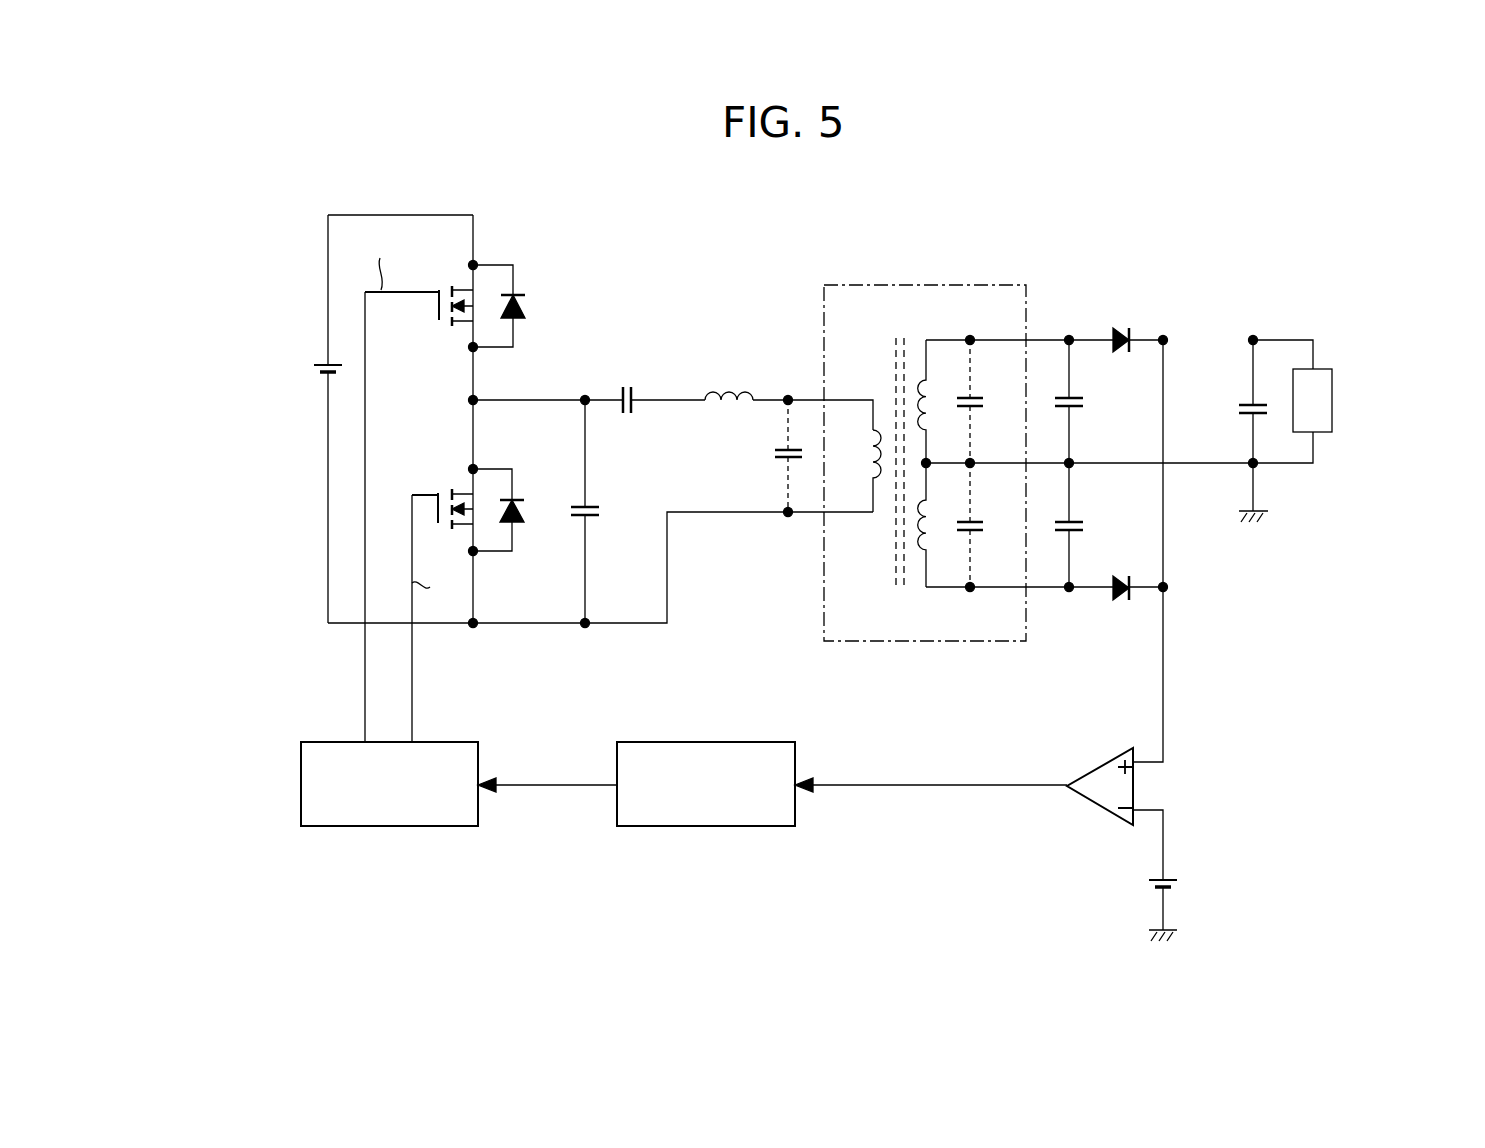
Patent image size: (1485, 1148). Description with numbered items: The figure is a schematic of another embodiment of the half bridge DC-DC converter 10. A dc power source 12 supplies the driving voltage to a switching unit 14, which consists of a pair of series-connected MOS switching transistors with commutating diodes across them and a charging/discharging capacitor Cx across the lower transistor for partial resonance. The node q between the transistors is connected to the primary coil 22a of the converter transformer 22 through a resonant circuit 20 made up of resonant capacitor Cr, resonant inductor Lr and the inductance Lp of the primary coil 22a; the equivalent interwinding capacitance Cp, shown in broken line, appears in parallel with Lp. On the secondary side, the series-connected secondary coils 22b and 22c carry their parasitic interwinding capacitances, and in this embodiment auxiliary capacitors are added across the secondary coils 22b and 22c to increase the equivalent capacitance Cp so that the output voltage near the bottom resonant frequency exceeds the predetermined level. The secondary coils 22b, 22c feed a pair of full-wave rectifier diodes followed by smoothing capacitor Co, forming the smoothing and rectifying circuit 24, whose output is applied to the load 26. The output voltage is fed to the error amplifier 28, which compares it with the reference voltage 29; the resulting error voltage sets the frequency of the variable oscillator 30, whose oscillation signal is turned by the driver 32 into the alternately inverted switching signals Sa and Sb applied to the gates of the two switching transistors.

The half bridge DC-DC converter 10 is at (1242, 260).
The dc power source 12 is at (314, 368).
The switching unit 14 is at (437, 397).
The resonant circuit 20 is at (695, 464).
The converter transformer 22 is at (998, 284).
The primary coil 22a is at (876, 430).
The secondary coil 22b is at (920, 375).
The secondary coil 22c is at (920, 552).
The smoothing and rectifying circuit 24 is at (1147, 442).
The load 26 is at (1334, 400).
The error amplifier 28 is at (1093, 768).
The reference voltage 29 is at (1178, 886).
The variable oscillator 30 is at (732, 828).
The driver 32 is at (435, 828).